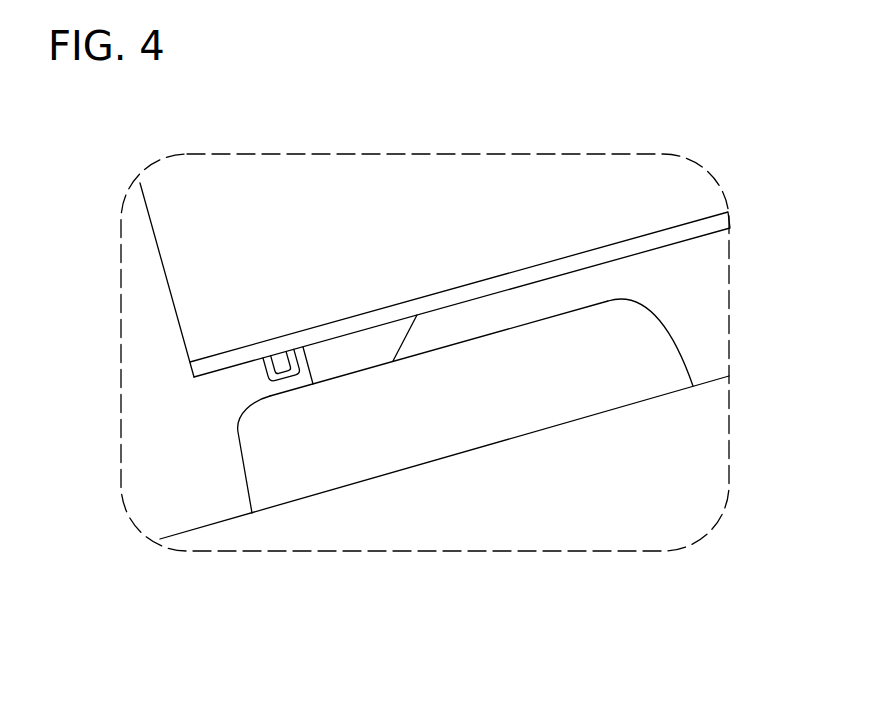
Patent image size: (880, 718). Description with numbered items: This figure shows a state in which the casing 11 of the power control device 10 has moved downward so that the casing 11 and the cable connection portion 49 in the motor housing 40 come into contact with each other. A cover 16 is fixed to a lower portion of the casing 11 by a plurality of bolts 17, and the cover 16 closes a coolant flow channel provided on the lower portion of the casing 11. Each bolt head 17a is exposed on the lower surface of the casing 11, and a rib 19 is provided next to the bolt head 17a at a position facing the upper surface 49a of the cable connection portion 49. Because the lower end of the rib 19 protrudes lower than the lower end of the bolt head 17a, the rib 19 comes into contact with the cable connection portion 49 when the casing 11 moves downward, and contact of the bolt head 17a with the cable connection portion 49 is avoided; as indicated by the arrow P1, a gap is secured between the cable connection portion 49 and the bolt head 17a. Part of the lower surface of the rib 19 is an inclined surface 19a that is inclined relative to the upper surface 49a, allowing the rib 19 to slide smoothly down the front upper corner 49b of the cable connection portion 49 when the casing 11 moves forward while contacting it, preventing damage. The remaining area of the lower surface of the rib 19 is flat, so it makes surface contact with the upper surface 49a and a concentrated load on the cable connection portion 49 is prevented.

The power control device 10 is at (155, 265).
The casing 11 is at (683, 182).
The cover 16 is at (720, 220).
The bolt 17 is at (279, 367).
The bolt head 17a is at (249, 237).
The rib 19 is at (410, 239).
The inclined surface 19a is at (422, 347).
The motor housing 40 is at (488, 527).
The cable connection portion 49 is at (362, 358).
The upper surface 49a is at (540, 320).
The front upper corner 49b is at (240, 427).
The arrow P1 is at (265, 390).